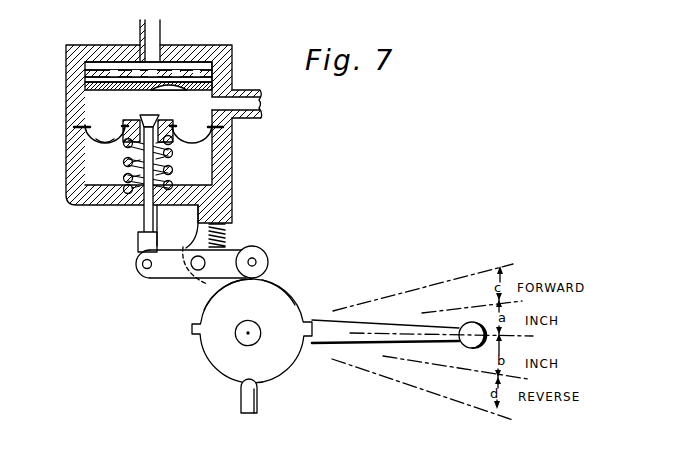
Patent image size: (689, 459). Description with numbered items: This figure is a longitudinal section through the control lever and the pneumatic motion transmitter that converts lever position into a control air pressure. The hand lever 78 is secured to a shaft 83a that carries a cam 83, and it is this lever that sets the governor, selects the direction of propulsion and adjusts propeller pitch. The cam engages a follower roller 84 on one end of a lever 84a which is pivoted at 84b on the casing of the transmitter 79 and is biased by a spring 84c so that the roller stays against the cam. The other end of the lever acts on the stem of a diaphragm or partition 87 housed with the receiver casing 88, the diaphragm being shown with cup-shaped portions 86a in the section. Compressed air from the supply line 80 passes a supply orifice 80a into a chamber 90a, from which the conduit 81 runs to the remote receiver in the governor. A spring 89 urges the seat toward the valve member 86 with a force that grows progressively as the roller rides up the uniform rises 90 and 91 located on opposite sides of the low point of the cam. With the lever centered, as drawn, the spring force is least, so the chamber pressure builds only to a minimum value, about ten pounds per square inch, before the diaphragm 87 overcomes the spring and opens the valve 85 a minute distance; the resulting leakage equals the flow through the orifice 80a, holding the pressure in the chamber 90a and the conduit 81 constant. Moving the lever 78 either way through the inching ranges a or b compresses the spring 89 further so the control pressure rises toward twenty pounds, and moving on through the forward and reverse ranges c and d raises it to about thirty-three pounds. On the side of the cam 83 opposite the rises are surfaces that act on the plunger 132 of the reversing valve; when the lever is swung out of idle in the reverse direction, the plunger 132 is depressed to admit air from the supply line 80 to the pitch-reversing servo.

The hand lever 78 is at (401, 330).
The transmitter 79 is at (256, 194).
The supply line 80 is at (152, 30).
The supply orifice 80a is at (180, 89).
The conduit 81 is at (251, 97).
The cam 83 is at (216, 354).
The shaft 83a is at (251, 345).
The follower roller 84 is at (265, 252).
The lever 84a is at (163, 276).
The pivot 84b is at (204, 269).
The spring 84c is at (227, 234).
The valve 85 is at (136, 231).
The valve member 86 is at (148, 116).
The diaphragm cups 86a is at (137, 120).
The diaphragm 87 is at (110, 144).
The receiver casing 88 is at (74, 193).
The spring 89 is at (171, 162).
The rise 90 is at (201, 312).
The chamber 90a is at (85, 112).
The rise 91 is at (295, 305).
The plunger 132 is at (250, 397).